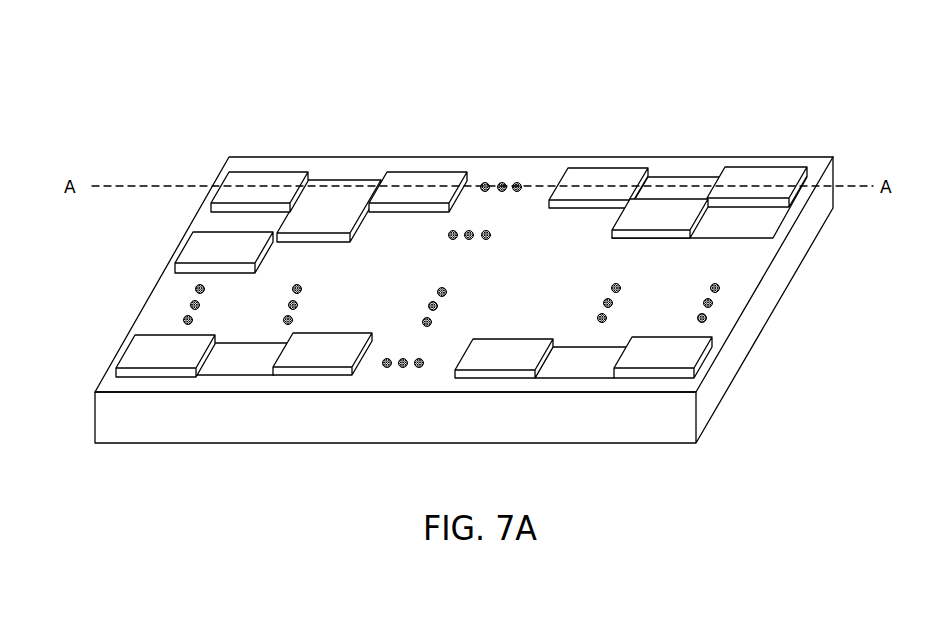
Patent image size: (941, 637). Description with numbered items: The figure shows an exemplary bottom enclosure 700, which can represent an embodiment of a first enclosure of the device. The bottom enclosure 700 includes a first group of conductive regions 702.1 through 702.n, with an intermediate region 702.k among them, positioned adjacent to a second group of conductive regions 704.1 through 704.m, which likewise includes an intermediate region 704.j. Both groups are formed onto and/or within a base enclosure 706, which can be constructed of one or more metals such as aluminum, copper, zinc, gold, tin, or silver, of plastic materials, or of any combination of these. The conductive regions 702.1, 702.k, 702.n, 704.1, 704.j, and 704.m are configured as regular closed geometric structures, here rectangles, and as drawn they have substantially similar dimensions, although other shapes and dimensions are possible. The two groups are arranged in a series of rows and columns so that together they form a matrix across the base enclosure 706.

The bottom enclosure 700 is at (498, 257).
The first conductive region of the first group 702.1 is at (270, 172).
The k-th conductive region of the first group 702.k is at (773, 167).
The n-th conductive region of the first group 702.n is at (662, 382).
The first conductive region of the second group 704.1 is at (358, 180).
The j-th conductive region of the second group 704.j is at (683, 177).
The m-th conductive region of the second group 704.m is at (572, 383).
The base enclosure 706 is at (542, 276).